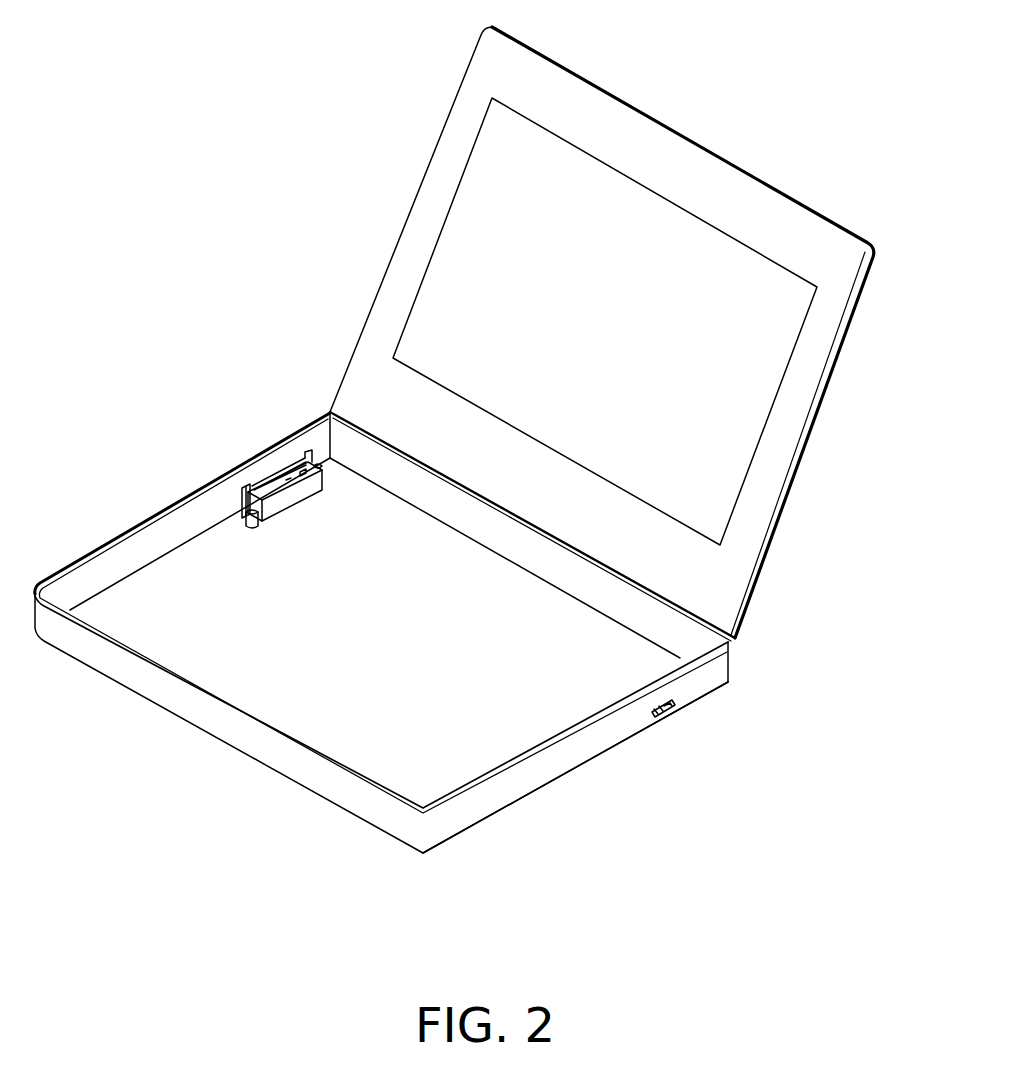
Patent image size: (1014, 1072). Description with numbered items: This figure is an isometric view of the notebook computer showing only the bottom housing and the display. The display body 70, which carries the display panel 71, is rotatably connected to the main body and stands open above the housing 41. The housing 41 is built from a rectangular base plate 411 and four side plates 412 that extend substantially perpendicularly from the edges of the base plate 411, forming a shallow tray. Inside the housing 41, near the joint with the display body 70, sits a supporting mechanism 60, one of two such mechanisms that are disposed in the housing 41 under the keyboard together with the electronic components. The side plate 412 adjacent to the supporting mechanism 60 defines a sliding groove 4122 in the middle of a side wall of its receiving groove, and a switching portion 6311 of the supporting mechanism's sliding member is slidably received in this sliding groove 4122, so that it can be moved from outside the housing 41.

The display body 70 is at (490, 72).
The display panel 71 is at (493, 258).
The supporting mechanism 60 is at (270, 488).
The housing 41 is at (399, 633).
The base plate 411 is at (327, 732).
The side plate 412 is at (218, 722).
The sliding groove 4122 is at (655, 721).
The switching portion 6311 is at (668, 715).